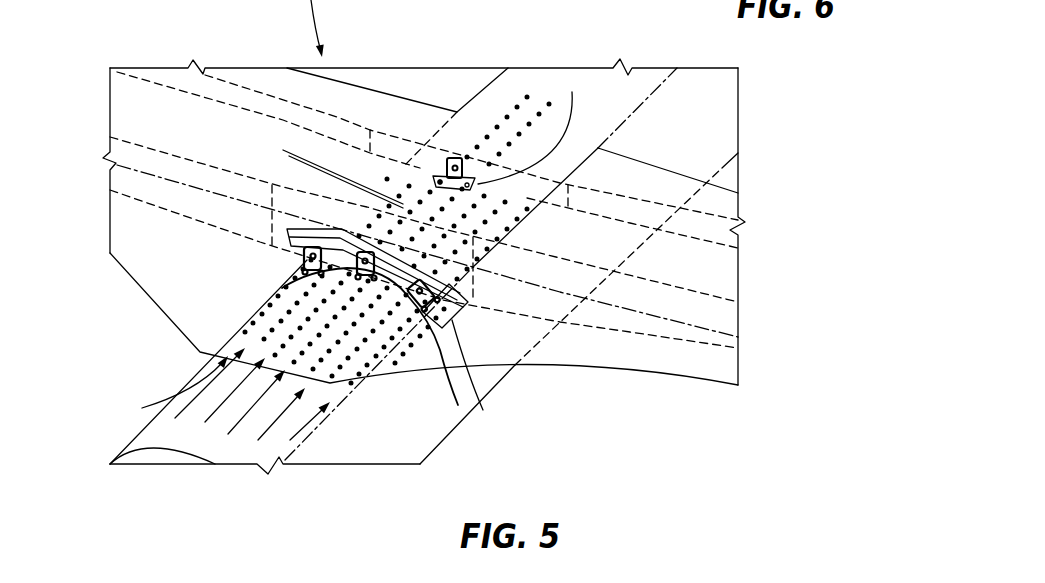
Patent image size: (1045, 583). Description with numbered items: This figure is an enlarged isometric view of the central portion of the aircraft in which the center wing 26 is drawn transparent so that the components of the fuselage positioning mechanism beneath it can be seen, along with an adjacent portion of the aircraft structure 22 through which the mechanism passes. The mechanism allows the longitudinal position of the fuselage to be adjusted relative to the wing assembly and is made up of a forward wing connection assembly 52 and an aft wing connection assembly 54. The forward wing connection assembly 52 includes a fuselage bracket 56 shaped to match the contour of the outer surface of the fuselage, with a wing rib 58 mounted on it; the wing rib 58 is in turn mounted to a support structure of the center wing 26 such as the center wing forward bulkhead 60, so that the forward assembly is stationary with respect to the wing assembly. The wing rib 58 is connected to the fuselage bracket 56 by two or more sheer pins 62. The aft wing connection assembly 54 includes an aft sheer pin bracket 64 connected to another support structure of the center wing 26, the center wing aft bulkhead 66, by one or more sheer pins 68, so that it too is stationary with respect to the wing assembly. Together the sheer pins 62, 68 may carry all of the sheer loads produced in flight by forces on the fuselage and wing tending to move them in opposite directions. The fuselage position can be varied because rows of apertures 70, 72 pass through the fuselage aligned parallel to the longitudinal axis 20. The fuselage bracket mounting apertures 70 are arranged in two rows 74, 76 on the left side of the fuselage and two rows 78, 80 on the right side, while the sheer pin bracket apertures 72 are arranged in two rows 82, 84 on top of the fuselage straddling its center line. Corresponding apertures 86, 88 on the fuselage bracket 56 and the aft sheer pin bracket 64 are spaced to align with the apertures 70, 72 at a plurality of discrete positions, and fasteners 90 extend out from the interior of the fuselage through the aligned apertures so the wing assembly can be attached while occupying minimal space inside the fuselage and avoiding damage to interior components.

The longitudinal axis 20 is at (284, 448).
The wall section 22 is at (128, 168).
The center wing 26 is at (698, 380).
The forward wing connection assembly 52 is at (262, 262).
The aft wing connection assembly 54 is at (436, 145).
The fuselage bracket 56 is at (395, 285).
The wing rib 58 is at (477, 278).
The center wing forward bulkhead 60 is at (712, 317).
The sheer pins 62 is at (297, 285).
The aft sheer pin bracket 64 is at (445, 178).
The center wing aft bulkhead 66 is at (390, 152).
The sheer pins 68 is at (457, 158).
The fuselage bracket mounting apertures 70 is at (332, 365).
The sheer pin bracket apertures 72 is at (283, 150).
The row 74 is at (298, 428).
The row 76 is at (271, 421).
The row 78 is at (173, 388).
The row 80 is at (198, 391).
The row 82 is at (246, 410).
The row 84 is at (223, 398).
The apertures 86 is at (483, 410).
The apertures 88 is at (539, 102).
The fasteners 90 is at (478, 183).